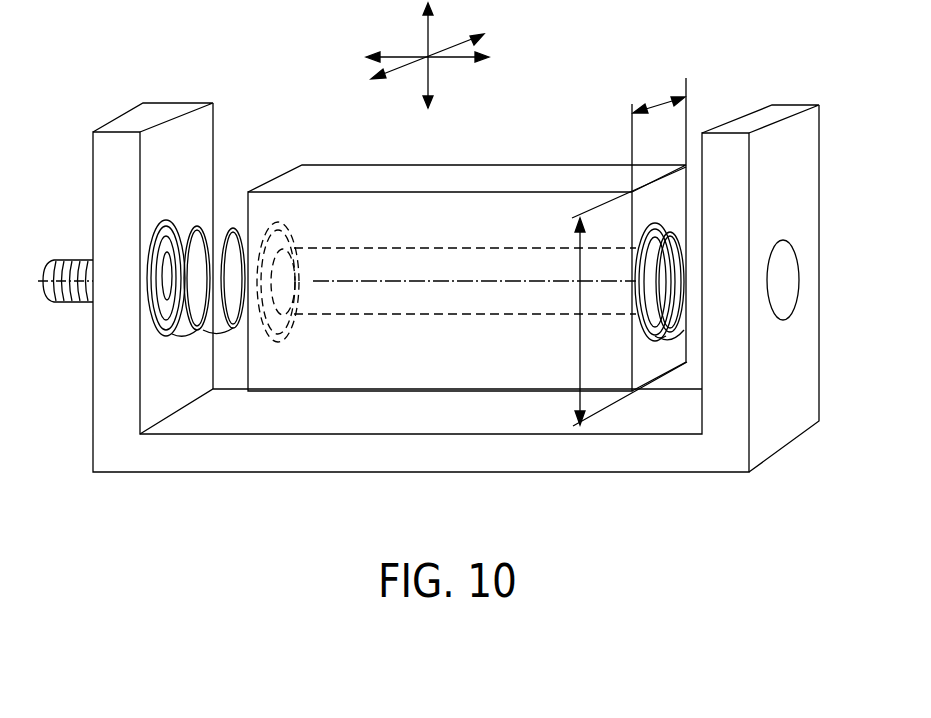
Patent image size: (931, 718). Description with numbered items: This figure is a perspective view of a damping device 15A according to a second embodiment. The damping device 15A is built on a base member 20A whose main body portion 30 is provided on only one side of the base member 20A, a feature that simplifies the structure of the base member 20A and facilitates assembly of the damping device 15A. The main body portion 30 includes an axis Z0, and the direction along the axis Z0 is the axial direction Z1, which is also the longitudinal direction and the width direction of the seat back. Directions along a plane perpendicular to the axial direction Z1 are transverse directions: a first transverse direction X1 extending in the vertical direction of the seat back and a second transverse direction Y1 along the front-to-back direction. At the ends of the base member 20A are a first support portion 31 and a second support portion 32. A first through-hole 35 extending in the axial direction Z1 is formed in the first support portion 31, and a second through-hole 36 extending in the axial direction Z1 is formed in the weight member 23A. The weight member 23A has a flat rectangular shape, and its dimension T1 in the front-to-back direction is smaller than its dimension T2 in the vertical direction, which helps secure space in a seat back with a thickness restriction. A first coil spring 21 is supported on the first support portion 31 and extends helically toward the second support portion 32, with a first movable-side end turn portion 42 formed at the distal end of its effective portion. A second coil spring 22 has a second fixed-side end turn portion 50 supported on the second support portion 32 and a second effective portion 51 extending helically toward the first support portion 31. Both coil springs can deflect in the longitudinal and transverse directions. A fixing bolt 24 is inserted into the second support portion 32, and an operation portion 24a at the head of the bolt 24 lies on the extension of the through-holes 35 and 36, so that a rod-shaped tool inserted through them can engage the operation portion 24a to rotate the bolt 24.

The damping device 15A is at (563, 92).
The base member 20A is at (431, 326).
The first coil spring 21 is at (672, 228).
The second coil spring 22 is at (232, 226).
The weight member 23A is at (430, 380).
The fixing bolt 24 is at (60, 258).
The operation portion 24a is at (172, 218).
The main body portion 30 is at (269, 474).
The first support portion 31 is at (787, 432).
The second support portion 32 is at (160, 372).
The first through-hole 35 is at (779, 322).
The second through-hole 36 is at (388, 312).
The first movable-side end turn portion 42 is at (663, 345).
The second fixed-side end turn portion 50 is at (147, 250).
The second effective portion 51 is at (194, 224).
The dimension in the front-to-back direction T1 is at (659, 123).
The dimension in the vertical direction T2 is at (580, 352).
The axis Z0 is at (426, 280).
The first transverse direction X1 is at (430, 86).
The second transverse direction Y1 is at (451, 48).
The axial direction Z1 is at (394, 52).